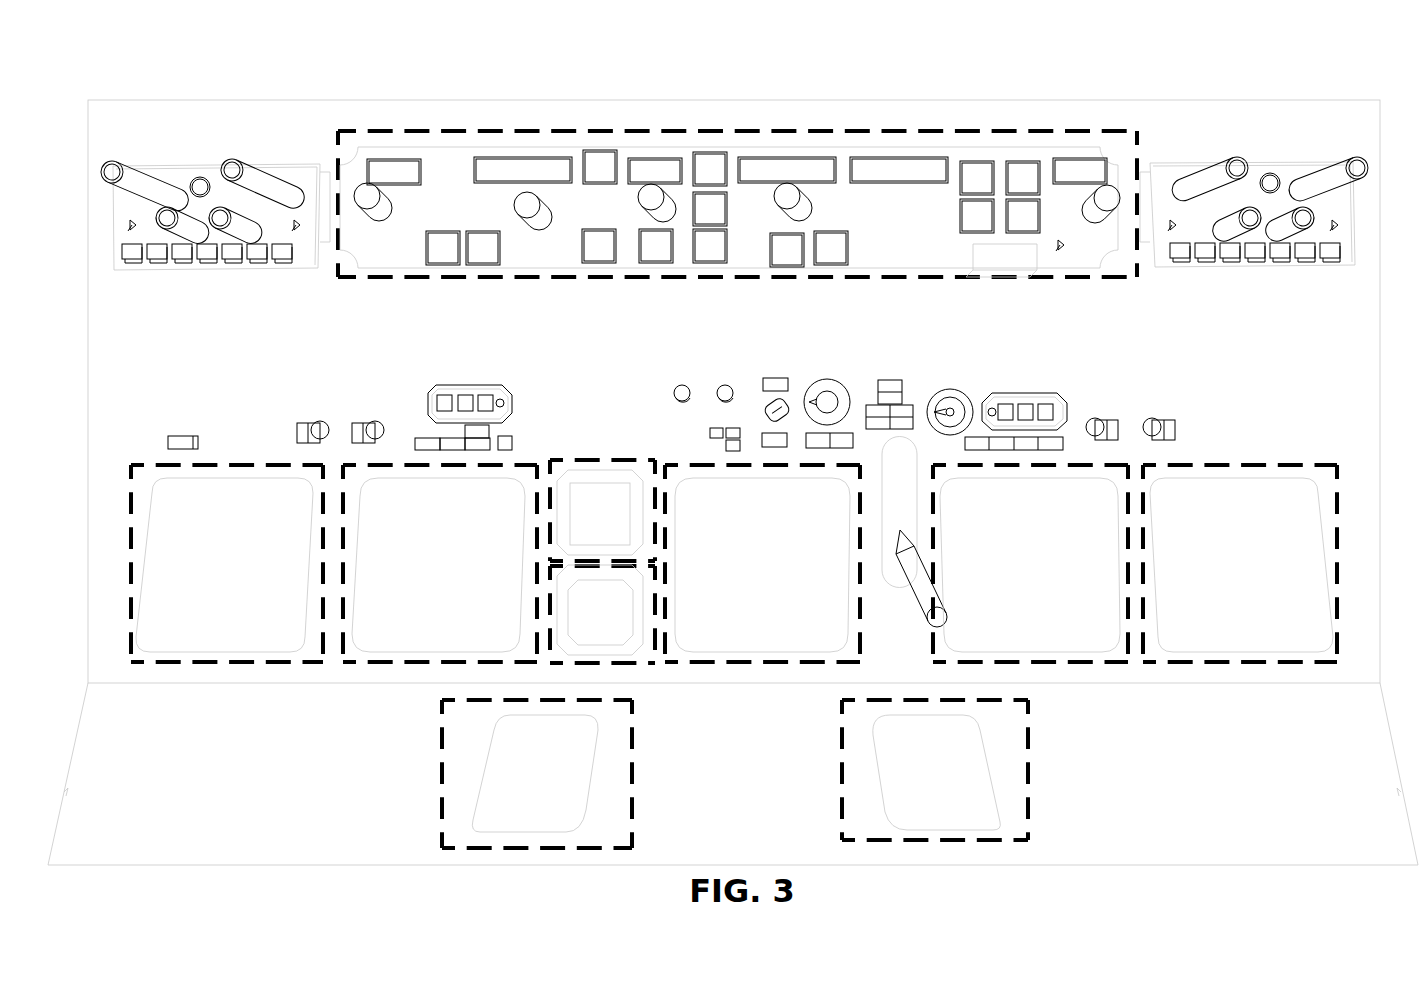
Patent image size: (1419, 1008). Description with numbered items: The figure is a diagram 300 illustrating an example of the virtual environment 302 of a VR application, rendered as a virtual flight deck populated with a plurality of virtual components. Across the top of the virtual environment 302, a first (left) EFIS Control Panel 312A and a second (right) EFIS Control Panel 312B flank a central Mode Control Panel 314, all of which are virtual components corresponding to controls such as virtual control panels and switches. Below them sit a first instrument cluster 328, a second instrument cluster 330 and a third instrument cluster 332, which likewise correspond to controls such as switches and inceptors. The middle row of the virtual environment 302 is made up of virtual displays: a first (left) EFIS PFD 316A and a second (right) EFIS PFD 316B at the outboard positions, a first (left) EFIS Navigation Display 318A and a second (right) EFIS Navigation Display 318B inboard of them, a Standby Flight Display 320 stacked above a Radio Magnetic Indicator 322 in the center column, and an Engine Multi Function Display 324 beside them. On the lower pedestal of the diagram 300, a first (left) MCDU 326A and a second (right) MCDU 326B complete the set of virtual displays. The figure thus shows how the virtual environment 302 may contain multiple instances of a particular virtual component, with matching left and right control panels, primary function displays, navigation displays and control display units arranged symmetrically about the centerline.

The diagram 300 is at (121, 98).
The virtual environment 302 is at (636, 54).
The first EFIS Control Panel 312A is at (206, 166).
The second EFIS Control Panel 312B is at (1257, 165).
The Mode Control Panel 314 is at (873, 234).
The first EFIS PFD 316A is at (201, 584).
The second EFIS PFD 316B is at (1212, 584).
The first EFIS Navigation Display 318A is at (406, 584).
The second EFIS Navigation Display 318B is at (994, 584).
The Standby Flight Display (ISFD) 320 is at (578, 537).
The Radio Magnetic Indicator (RMI) 322 is at (578, 629).
The Engine Multi Function Display (MFD) 324 is at (742, 584).
The first MCDU 326A is at (506, 785).
The second MCDU 326B is at (902, 785).
The first instrument cluster 328 is at (435, 365).
The second instrument cluster 330 is at (729, 366).
The third instrument cluster 332 is at (1040, 366).